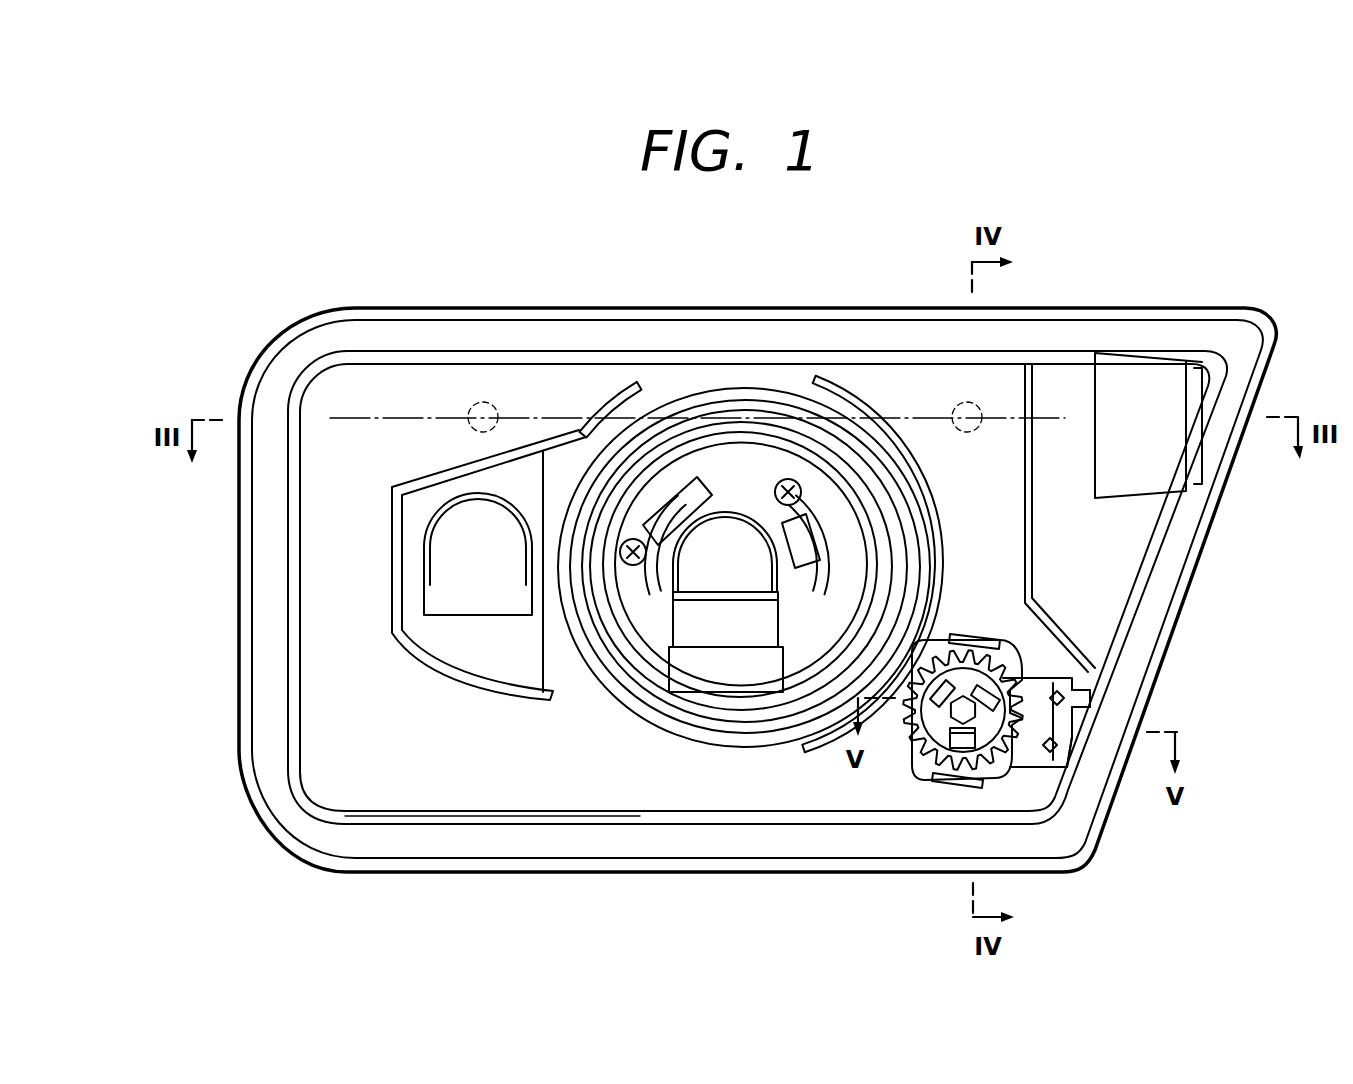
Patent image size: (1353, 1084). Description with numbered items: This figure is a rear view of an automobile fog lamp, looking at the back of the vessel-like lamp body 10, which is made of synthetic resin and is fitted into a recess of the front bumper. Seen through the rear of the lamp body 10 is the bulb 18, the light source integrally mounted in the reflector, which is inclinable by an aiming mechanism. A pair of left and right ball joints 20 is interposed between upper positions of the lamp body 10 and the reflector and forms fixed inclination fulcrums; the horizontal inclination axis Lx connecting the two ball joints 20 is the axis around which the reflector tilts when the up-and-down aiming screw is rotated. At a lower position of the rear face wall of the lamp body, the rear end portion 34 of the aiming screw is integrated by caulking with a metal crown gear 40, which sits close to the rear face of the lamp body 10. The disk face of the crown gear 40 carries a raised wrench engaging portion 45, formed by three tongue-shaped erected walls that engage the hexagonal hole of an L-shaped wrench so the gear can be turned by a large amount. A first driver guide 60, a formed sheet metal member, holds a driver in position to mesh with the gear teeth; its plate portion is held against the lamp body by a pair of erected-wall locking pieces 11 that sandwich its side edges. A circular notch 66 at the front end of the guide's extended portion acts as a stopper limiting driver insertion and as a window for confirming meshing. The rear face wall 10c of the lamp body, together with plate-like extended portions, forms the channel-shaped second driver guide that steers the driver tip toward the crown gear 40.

The lamp body 10 is at (537, 387).
The rear face wall of the lamp body 10c is at (600, 742).
The locking pieces 11 is at (965, 633).
The bulb 18 is at (730, 503).
The ball joints 20 is at (483, 400).
The rear end portion of the aiming screw 34 is at (1000, 719).
The crown gear 40 is at (913, 760).
The wrench engaging portion 45 is at (976, 686).
The first driver guide 60 is at (1033, 780).
The notch 66 is at (1014, 704).
The inclination axis Lx is at (567, 420).